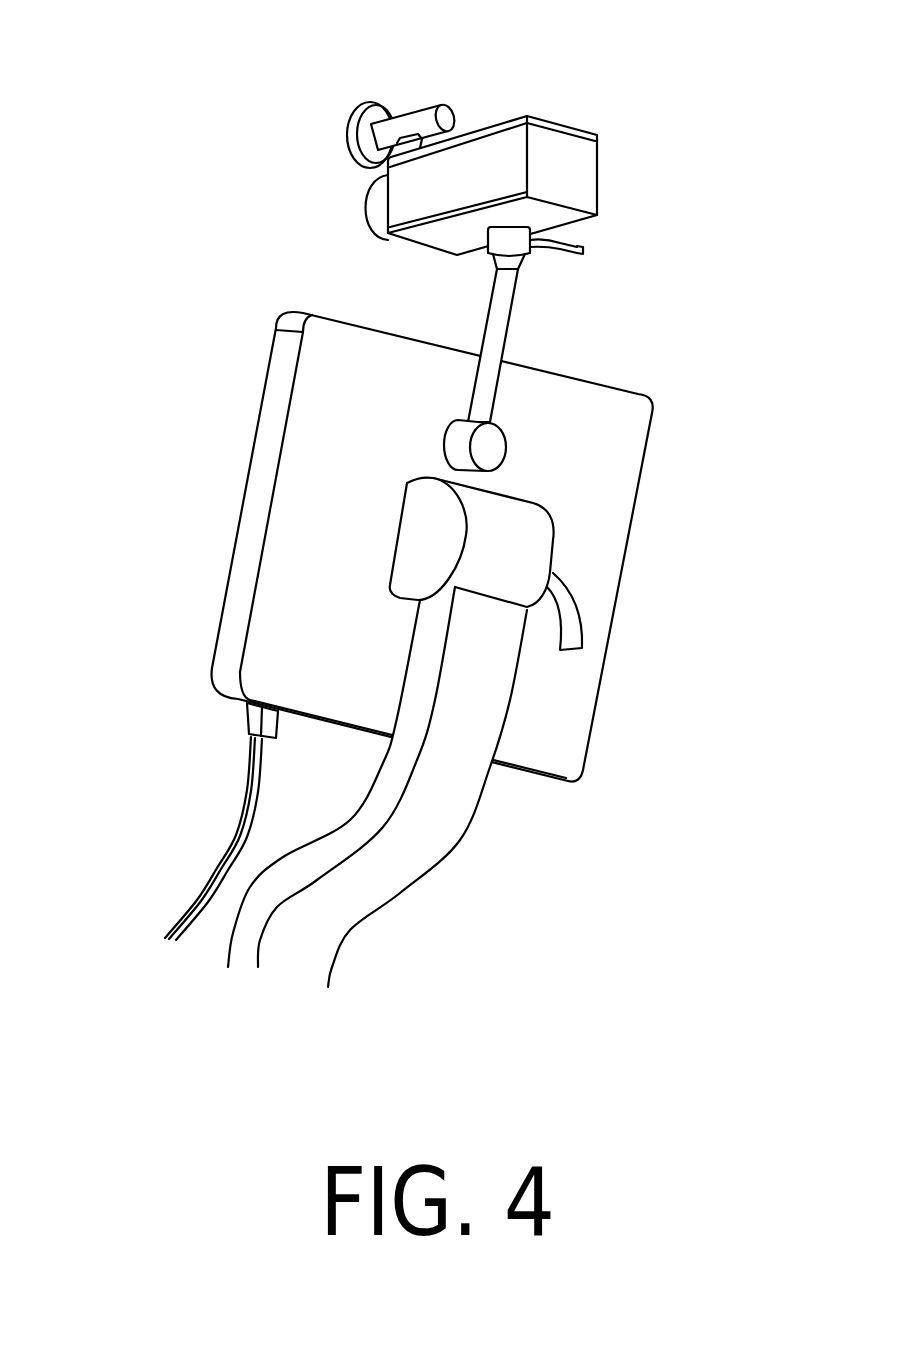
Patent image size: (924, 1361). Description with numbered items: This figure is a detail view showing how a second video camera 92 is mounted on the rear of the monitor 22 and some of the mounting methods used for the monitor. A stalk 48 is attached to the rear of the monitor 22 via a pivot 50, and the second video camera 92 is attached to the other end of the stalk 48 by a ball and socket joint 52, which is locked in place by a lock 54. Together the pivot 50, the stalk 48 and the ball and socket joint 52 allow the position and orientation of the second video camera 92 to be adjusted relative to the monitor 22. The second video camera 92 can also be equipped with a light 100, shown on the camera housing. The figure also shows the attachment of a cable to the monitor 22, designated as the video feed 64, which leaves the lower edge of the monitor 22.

The monitor 22 is at (612, 657).
The stalk 48 is at (495, 330).
The pivot 50 is at (498, 455).
The ball and socket joint 52 is at (512, 257).
The lock 54 is at (583, 248).
The video feed 64 is at (240, 800).
The second video camera 92 is at (558, 175).
The light 100 is at (405, 125).